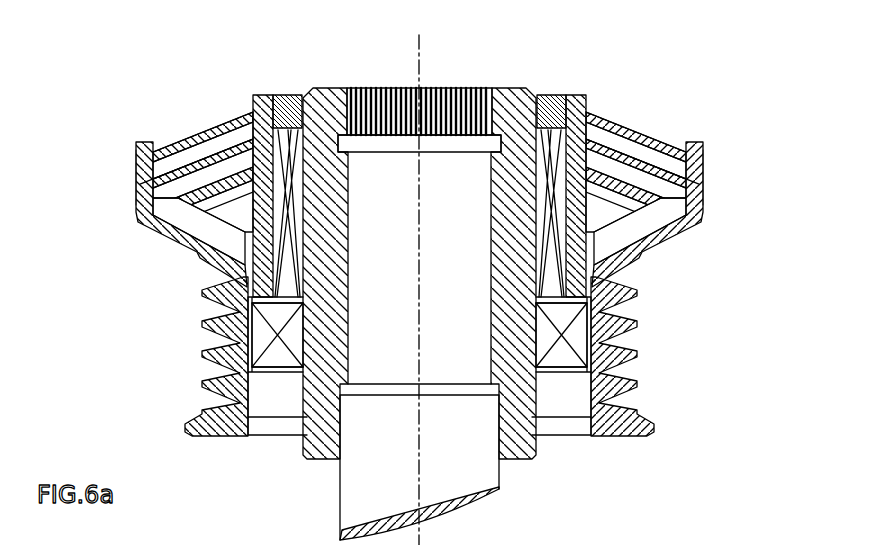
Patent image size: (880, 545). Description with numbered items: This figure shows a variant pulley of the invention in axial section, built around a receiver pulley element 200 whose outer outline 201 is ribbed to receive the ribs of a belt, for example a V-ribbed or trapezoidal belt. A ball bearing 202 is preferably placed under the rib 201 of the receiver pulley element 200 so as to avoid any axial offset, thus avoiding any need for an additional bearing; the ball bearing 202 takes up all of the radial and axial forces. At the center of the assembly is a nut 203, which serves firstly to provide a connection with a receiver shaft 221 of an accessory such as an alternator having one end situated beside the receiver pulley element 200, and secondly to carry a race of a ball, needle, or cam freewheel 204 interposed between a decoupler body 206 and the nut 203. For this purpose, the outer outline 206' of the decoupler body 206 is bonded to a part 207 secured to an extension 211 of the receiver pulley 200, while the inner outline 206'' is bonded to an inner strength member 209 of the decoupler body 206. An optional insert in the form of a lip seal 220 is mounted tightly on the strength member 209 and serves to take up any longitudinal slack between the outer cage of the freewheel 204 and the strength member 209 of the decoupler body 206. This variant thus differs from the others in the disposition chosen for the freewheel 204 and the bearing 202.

The receiver pulley element 200 is at (200, 377).
The outer outline 201 is at (245, 300).
The ball bearing 202 is at (258, 338).
The nut 203 is at (518, 88).
The freewheel 204 is at (290, 133).
The decoupler body 206 is at (424, 183).
The outer outline of the decoupler body 206' is at (475, 123).
The inner outline of the decoupler body 206'' is at (435, 128).
The part secured to the extension 207 is at (133, 167).
The inner strength member 209 is at (255, 96).
The extension 211 is at (132, 188).
The lip seal 220 is at (553, 95).
The receiver shaft 221 is at (483, 465).